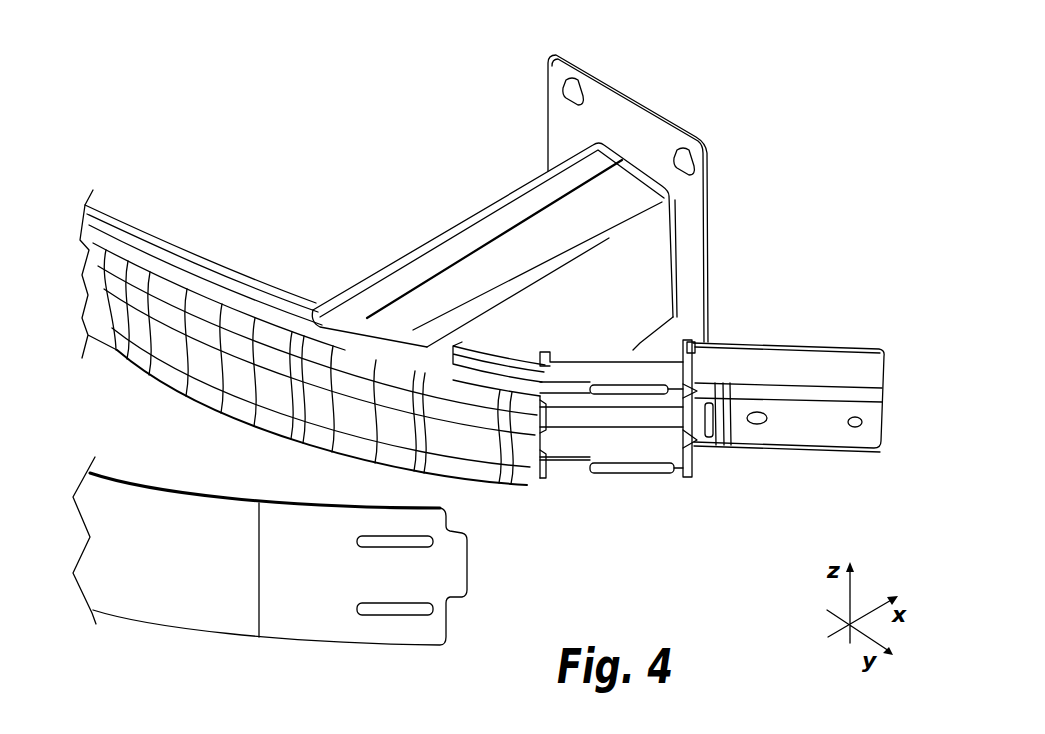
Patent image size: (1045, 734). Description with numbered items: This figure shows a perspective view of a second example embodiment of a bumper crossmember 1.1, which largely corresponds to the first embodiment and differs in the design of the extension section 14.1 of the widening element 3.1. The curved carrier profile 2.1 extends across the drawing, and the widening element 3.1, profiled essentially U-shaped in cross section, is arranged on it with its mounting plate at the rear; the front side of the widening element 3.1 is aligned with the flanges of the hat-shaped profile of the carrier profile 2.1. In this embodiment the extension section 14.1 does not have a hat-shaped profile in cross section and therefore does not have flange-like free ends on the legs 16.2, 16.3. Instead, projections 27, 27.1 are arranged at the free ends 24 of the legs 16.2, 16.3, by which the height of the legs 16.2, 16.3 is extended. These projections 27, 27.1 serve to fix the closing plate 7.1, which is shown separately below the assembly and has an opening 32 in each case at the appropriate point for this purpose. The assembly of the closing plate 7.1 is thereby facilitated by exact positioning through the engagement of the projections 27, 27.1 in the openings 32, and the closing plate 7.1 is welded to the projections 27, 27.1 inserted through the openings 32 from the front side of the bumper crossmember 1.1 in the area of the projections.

The bumper crossmember 1.1 is at (276, 175).
The carrier profile 2.1 is at (187, 245).
The widening element 3.1 is at (630, 353).
The closing plate 7.1 is at (240, 580).
The extension section 14.1 is at (582, 463).
The leg 16.2 is at (607, 373).
The leg 16.3 is at (668, 453).
The free ends of the legs 24 is at (675, 392).
The projection 27 is at (650, 384).
The projection 27.1 is at (632, 476).
The opening 32 is at (354, 544).